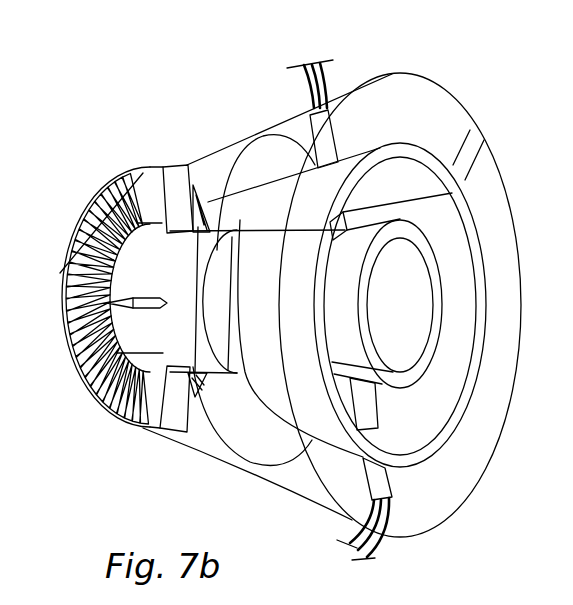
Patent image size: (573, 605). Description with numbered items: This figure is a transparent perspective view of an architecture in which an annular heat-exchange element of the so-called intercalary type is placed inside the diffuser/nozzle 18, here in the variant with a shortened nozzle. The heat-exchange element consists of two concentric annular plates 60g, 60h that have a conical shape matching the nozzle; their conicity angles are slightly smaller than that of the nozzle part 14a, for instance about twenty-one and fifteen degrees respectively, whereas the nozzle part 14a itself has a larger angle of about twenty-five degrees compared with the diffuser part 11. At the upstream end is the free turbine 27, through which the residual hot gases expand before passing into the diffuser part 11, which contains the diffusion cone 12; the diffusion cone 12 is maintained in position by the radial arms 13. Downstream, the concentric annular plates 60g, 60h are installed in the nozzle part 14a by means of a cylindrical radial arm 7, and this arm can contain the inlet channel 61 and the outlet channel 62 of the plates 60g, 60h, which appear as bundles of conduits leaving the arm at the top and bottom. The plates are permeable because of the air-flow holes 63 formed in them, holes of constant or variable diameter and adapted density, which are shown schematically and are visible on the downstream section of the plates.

The cylindrical radial arm 7 is at (330, 143).
The diffuser part 11 is at (181, 445).
The diffusion cone 12 is at (135, 262).
The radial arms 13 is at (170, 173).
The nozzle part 14a is at (298, 138).
The diffuser/nozzle 18 is at (207, 86).
The free turbine 27 is at (103, 193).
The concentric annular plate 60g is at (478, 137).
The concentric annular plate 60h is at (423, 363).
The inlet channel 61 is at (302, 60).
The outlet channel 62 is at (370, 556).
The air-flow holes 63 is at (465, 210).